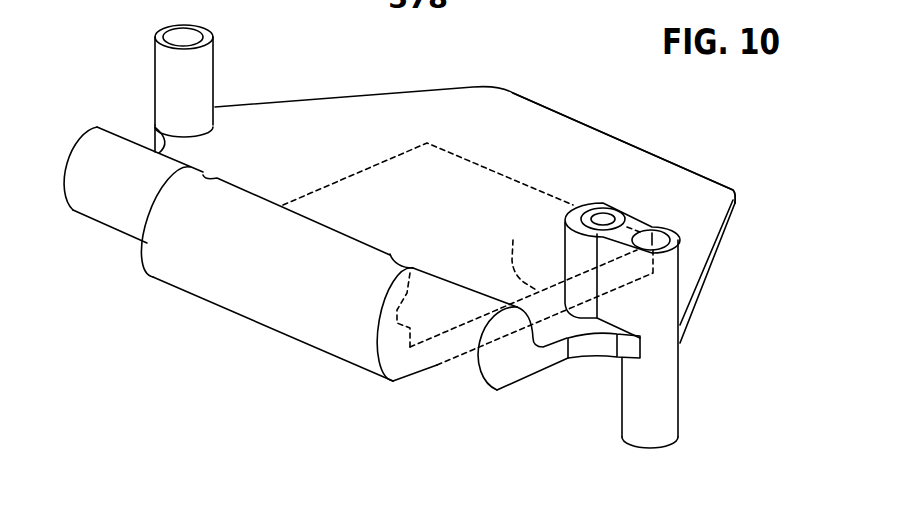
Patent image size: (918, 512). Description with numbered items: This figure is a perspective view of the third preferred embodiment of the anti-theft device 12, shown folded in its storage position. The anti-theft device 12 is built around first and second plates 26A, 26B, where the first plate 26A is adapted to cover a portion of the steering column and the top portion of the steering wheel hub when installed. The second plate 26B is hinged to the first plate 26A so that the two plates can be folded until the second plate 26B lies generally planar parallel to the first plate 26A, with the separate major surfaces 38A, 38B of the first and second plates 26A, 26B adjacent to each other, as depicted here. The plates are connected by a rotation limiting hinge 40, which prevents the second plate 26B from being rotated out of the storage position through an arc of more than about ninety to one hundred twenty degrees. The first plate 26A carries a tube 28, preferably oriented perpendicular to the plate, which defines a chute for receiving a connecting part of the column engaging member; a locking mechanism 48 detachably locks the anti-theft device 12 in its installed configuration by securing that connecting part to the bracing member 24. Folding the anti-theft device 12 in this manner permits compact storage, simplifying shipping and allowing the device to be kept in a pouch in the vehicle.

The anti-theft device 12 is at (522, 142).
The bracing member 24 is at (402, 121).
The first plate 26A is at (658, 180).
The second plate 26B is at (417, 380).
The tube 28 is at (198, 80).
The major surface 38A is at (707, 291).
The major surface 38B is at (512, 248).
The rotation limiting hinge 40 is at (90, 198).
The locking mechanism 48 is at (604, 212).